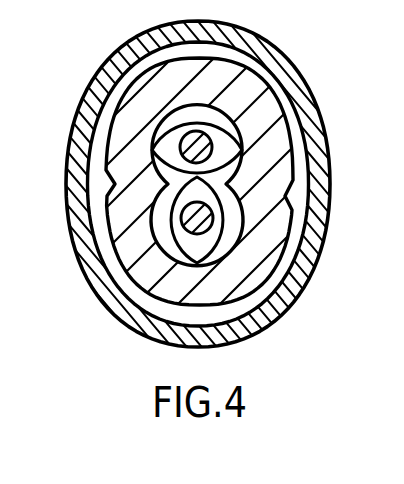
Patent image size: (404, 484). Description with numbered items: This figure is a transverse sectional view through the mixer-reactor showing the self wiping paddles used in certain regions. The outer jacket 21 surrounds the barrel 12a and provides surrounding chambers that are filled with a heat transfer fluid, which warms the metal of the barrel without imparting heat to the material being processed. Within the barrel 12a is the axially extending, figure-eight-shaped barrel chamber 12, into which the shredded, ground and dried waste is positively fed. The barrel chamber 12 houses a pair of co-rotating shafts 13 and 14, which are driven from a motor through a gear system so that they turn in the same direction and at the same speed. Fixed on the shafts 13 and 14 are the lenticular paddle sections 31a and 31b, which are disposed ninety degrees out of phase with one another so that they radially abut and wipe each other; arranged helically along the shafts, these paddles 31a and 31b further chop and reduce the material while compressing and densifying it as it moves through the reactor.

The jacket 21 is at (329, 177).
The barrel 12a is at (268, 82).
The barrel chamber 12 is at (214, 236).
The paddle section 31b is at (226, 148).
The paddle section 31a is at (234, 239).
The shaft 13 is at (180, 147).
The shaft 14 is at (181, 218).